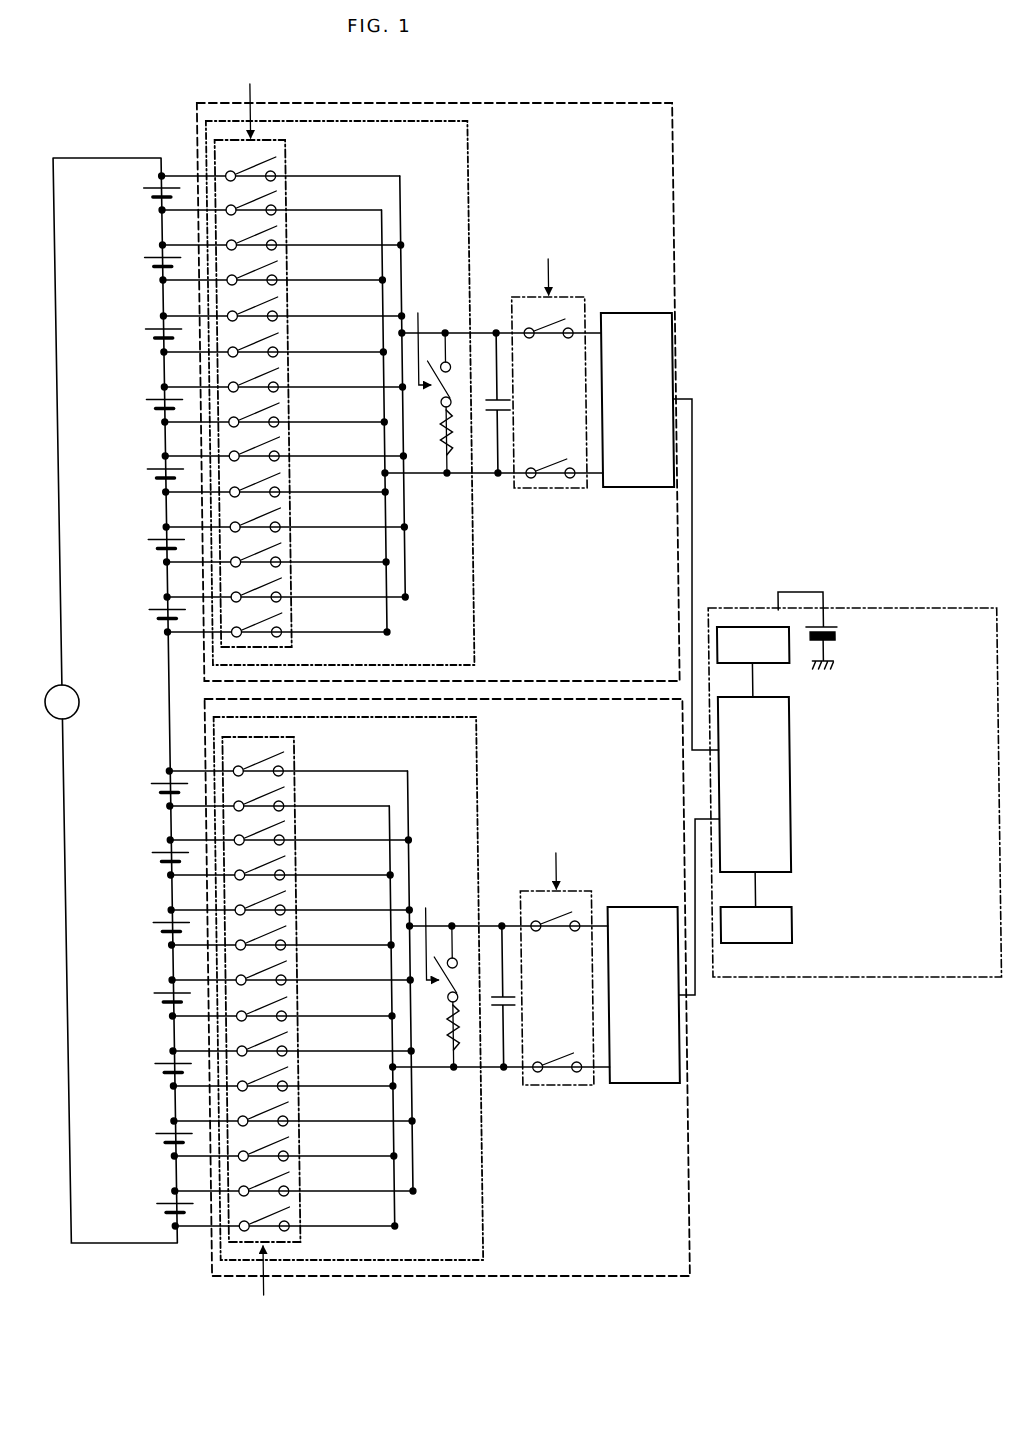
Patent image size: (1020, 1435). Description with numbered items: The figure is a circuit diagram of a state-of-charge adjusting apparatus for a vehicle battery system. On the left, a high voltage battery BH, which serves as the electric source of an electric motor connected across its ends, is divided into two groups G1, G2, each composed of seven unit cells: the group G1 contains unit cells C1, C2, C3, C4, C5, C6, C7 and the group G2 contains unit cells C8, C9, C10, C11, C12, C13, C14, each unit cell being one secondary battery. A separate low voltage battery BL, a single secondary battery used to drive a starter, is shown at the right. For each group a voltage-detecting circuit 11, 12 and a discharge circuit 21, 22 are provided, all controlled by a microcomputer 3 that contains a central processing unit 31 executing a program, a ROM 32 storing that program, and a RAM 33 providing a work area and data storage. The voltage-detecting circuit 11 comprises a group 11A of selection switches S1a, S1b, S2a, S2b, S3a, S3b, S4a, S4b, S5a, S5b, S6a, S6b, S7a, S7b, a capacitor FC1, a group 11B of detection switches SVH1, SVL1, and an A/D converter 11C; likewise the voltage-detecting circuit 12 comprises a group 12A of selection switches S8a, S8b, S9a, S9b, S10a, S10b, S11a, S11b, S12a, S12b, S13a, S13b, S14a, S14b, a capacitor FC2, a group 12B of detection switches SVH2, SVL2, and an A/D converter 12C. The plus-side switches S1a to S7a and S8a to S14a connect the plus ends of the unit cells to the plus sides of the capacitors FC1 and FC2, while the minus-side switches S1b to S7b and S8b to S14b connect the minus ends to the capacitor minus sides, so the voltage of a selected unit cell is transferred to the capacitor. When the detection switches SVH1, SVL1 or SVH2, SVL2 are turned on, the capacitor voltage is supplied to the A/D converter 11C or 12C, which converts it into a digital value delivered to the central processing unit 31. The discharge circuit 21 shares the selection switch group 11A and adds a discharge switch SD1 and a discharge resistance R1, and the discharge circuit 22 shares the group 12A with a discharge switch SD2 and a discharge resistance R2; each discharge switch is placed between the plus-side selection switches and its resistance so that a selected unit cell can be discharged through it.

The voltage-detecting circuit 12 is at (679, 180).
The group of selection switches 12A is at (274, 139).
The group of detection switches 12B is at (586, 487).
The A/D converter 12C is at (671, 347).
The discharge circuit 22 is at (471, 178).
The voltage-detecting circuit 11 is at (679, 1168).
The group of selection switches 11A is at (290, 1241).
The group of detection switches 11B is at (569, 1087).
The A/D converter 11C is at (672, 1040).
The discharge circuit 21 is at (473, 755).
The microcomputer 3 is at (795, 763).
The central processing unit 31 is at (785, 800).
The ROM 32 is at (744, 625).
The RAM 33 is at (785, 913).
The high voltage battery BH is at (180, 153).
The low voltage battery BL is at (832, 647).
The group G1 is at (137, 976).
The group G2 is at (140, 385).
The unit cell C1 is at (146, 1204).
The unit cell C2 is at (146, 1134).
The unit cell C3 is at (146, 1064).
The unit cell C4 is at (146, 993).
The unit cell C5 is at (146, 922).
The unit cell C6 is at (146, 852).
The unit cell C7 is at (146, 784).
The unit cell C8 is at (146, 610).
The unit cell C9 is at (146, 540).
The unit cell C10 is at (146, 469).
The unit cell C11 is at (146, 400).
The unit cell C12 is at (146, 329).
The unit cell C13 is at (146, 258).
The unit cell C14 is at (146, 188).
The selection switch S1a is at (260, 1174).
The selection switch S1b is at (260, 1209).
The selection switch S2a is at (260, 1104).
The selection switch S2b is at (260, 1139).
The selection switch S3a is at (260, 1034).
The selection switch S3b is at (260, 1069).
The selection switch S4a is at (260, 963).
The selection switch S4b is at (260, 999).
The selection switch S5a is at (260, 893).
The selection switch S5b is at (260, 928).
The selection switch S6a is at (260, 823).
The selection switch S6b is at (260, 858).
The selection switch S7a is at (260, 754).
The selection switch S7b is at (260, 789).
The selection switch S8a is at (260, 580).
The selection switch S8b is at (260, 615).
The selection switch S9a is at (260, 510).
The selection switch S9b is at (260, 545).
The selection switch S10a is at (260, 439).
The selection switch S10b is at (260, 475).
The selection switch S11a is at (260, 370).
The selection switch S11b is at (260, 405).
The selection switch S12a is at (260, 299).
The selection switch S12b is at (260, 335).
The selection switch S13a is at (260, 228).
The selection switch S13b is at (260, 263).
The selection switch S14a is at (260, 159).
The selection switch S14b is at (260, 193).
The discharge switch SD1 is at (435, 992).
The discharge switch SD2 is at (435, 395).
The discharge resistance R1 is at (457, 1033).
The discharge resistance R2 is at (457, 443).
The capacitor FC1 is at (487, 1017).
The capacitor FC2 is at (487, 423).
The detection switch SVH1 is at (557, 907).
The detection switch SVH2 is at (562, 311).
The detection switch SVL1 is at (549, 1071).
The detection switch SVL2 is at (552, 478).